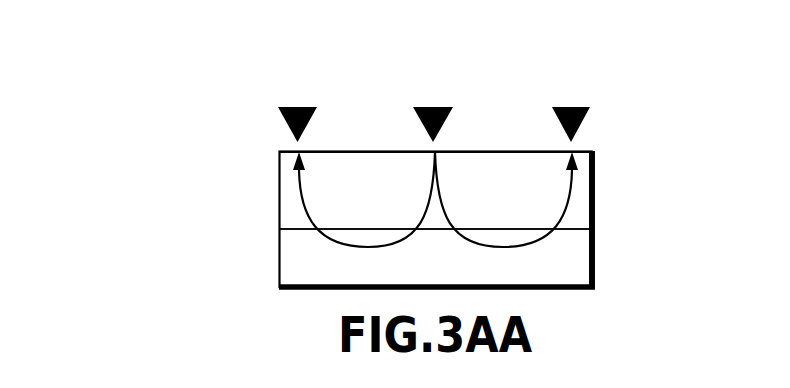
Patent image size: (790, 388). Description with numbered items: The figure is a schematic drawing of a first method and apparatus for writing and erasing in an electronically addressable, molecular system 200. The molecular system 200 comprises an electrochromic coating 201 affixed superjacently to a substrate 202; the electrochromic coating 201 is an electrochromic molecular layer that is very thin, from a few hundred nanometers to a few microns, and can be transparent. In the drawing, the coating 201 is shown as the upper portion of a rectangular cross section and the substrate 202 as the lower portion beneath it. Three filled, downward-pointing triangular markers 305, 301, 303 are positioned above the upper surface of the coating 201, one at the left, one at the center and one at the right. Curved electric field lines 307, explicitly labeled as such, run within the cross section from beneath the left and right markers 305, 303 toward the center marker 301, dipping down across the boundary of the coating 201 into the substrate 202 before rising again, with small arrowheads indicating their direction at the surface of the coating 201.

The electronically addressable molecular system 200 is at (243, 100).
The electrochromic coating 201 is at (595, 196).
The substrate 202 is at (595, 257).
The center electrode 301 is at (437, 107).
The right electrode 303 is at (572, 107).
The left electrode 305 is at (297, 107).
The electric field line 307 is at (333, 243).